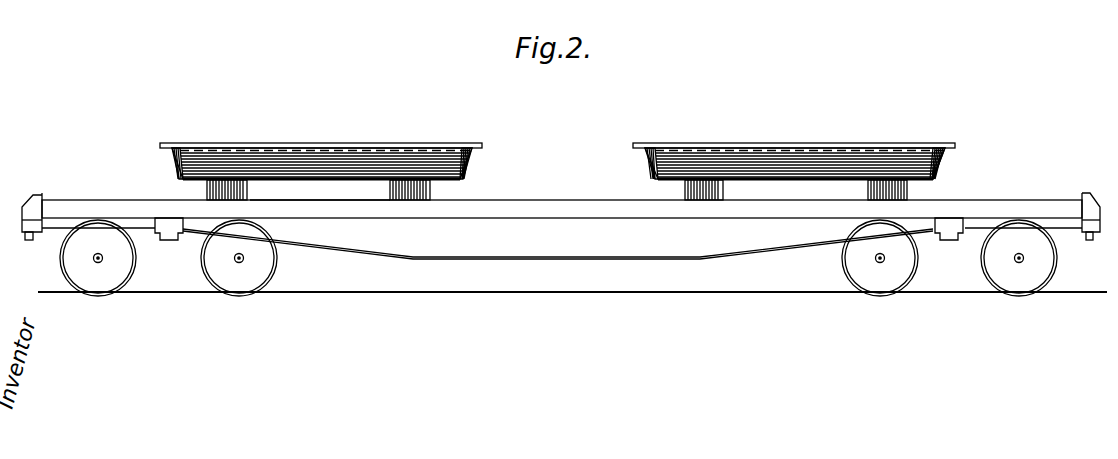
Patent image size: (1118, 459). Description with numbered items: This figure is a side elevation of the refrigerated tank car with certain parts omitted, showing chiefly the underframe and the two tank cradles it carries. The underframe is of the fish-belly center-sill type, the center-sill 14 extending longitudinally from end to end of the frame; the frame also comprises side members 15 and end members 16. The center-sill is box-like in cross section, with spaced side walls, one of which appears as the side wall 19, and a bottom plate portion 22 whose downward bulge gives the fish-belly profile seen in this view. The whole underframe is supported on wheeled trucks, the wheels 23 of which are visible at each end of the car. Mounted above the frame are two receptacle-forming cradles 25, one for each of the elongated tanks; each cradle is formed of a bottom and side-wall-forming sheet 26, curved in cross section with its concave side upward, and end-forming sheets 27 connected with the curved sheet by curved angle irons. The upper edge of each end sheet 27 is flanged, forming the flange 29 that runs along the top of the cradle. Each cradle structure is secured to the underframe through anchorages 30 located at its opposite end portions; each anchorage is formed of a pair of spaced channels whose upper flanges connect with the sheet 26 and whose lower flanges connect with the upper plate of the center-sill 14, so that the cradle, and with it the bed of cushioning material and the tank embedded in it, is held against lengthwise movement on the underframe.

The center-sill 14 is at (535, 246).
The side members 15 is at (409, 187).
The end members 16 is at (40, 195).
The side wall of center-sill 19 is at (618, 246).
The bottom plate portion of center-sill 22 is at (565, 259).
The wheels 23 is at (218, 260).
The cradle 25 is at (346, 146).
The bottom and side-wall-forming sheet 26 is at (296, 160).
The end-forming sheet 27 is at (172, 155).
The flange 29 is at (163, 144).
The anchorage 30 is at (207, 188).